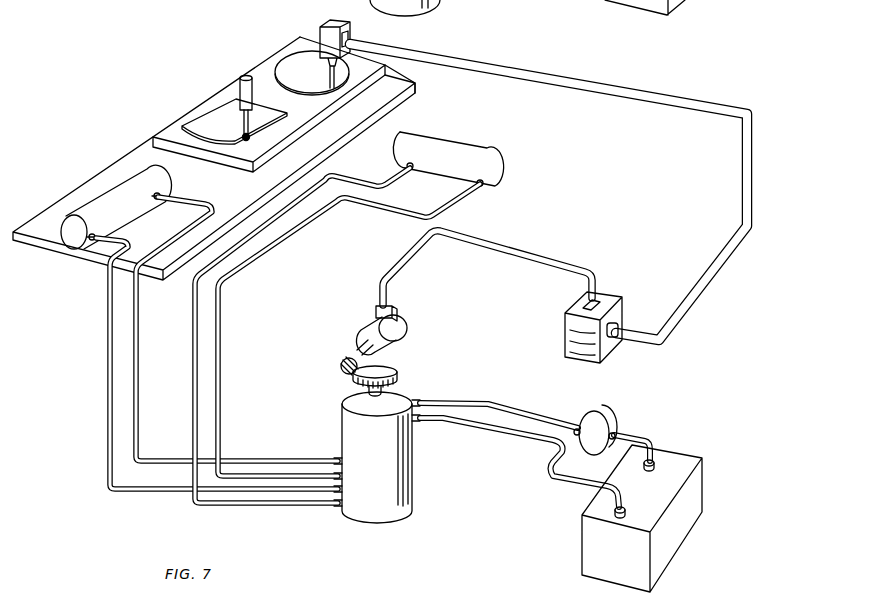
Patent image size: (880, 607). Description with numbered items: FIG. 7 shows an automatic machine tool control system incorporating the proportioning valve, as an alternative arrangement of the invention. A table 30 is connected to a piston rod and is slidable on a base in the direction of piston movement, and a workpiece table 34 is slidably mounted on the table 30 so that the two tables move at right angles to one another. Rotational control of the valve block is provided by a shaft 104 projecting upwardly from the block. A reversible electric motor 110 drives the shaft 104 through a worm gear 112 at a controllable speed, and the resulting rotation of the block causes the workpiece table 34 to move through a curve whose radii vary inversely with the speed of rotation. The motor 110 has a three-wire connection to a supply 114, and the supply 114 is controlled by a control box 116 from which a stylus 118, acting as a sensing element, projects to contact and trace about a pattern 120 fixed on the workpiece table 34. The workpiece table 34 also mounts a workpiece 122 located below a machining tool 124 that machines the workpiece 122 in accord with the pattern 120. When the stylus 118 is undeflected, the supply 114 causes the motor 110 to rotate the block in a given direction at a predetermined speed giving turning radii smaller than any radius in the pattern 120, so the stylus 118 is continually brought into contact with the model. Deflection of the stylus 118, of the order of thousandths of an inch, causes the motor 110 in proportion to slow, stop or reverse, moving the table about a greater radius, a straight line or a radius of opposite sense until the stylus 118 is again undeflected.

The table 30 is at (82, 197).
The workpiece table 34 is at (310, 105).
The shaft 104 is at (398, 393).
The electric motor 110 is at (394, 333).
The worm gear 112 is at (338, 370).
The supply 114 is at (607, 343).
The control box 116 is at (328, 42).
The stylus 118 is at (383, 65).
The pattern 120 is at (297, 68).
The workpiece 122 is at (217, 117).
The machining tool 124 is at (240, 82).